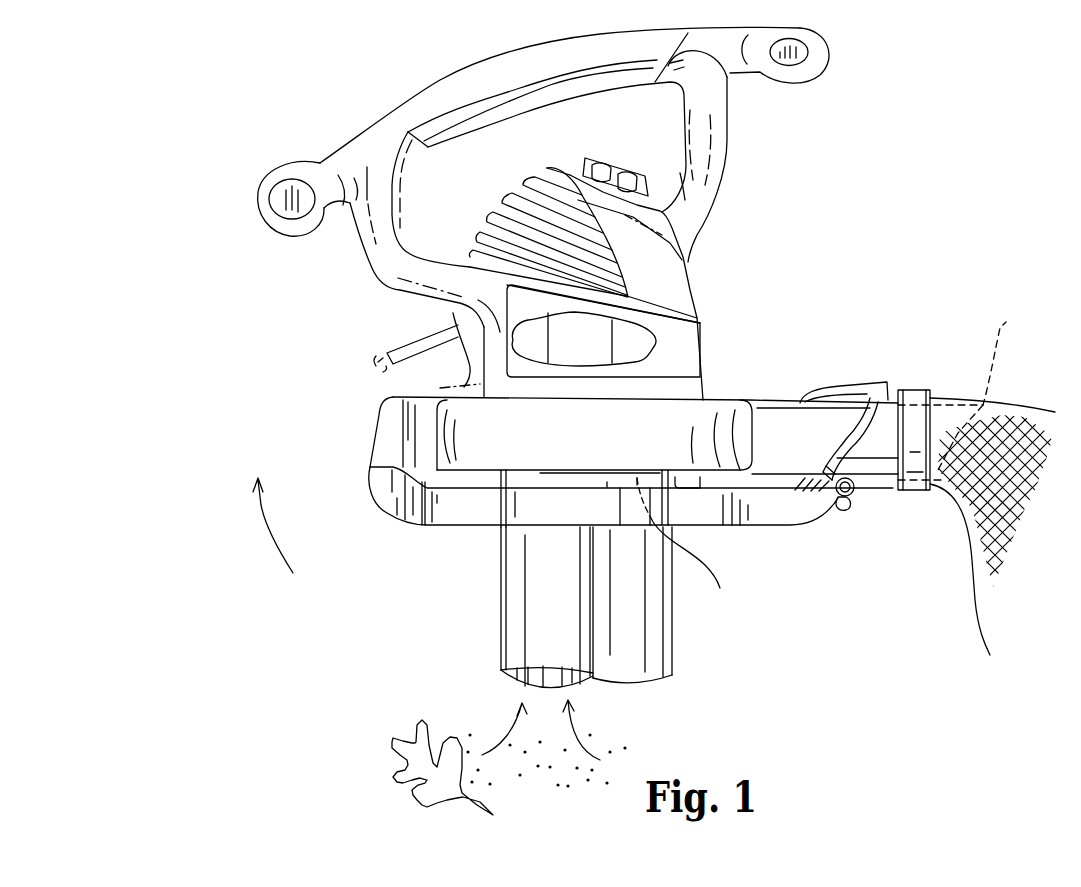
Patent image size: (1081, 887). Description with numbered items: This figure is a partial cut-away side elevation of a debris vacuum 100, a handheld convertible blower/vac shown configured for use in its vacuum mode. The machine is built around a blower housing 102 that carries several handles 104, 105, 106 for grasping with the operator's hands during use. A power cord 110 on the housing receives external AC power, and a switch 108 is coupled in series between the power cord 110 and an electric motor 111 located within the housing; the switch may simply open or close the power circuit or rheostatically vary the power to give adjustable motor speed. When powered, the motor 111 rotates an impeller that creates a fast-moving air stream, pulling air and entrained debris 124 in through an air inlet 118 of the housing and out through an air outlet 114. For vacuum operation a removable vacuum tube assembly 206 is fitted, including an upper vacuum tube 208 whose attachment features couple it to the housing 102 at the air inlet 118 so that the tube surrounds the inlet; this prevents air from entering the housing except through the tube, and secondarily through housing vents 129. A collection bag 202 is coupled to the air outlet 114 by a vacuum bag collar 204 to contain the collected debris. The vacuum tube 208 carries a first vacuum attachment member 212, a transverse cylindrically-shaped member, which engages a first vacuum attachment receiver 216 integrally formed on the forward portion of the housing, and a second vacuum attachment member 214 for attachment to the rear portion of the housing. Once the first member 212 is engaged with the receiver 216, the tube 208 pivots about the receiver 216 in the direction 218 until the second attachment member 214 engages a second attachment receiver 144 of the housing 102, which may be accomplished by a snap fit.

The debris vacuum 100 is at (750, 170).
The blower housing 102 is at (700, 343).
The handle 104 is at (463, 68).
The handle 105 is at (285, 177).
The handle 106 is at (808, 44).
The switch 108 is at (598, 158).
The power cord 110 is at (397, 346).
The motor 111 is at (620, 336).
The air outlet 114 is at (971, 393).
The air inlet 118 is at (686, 548).
The debris 124 is at (400, 737).
The housing vents 129 is at (493, 224).
The second attachment receiver 144 is at (375, 448).
The collection bag 202 is at (970, 592).
The vacuum bag collar 204 is at (915, 390).
The vacuum tube assembly 206 is at (490, 619).
The vacuum tube 208 is at (500, 573).
The first vacuum attachment member 212 is at (855, 495).
The second vacuum attachment member 214 is at (372, 497).
The first vacuum attachment receiver 216 is at (845, 505).
The direction 218 is at (263, 527).